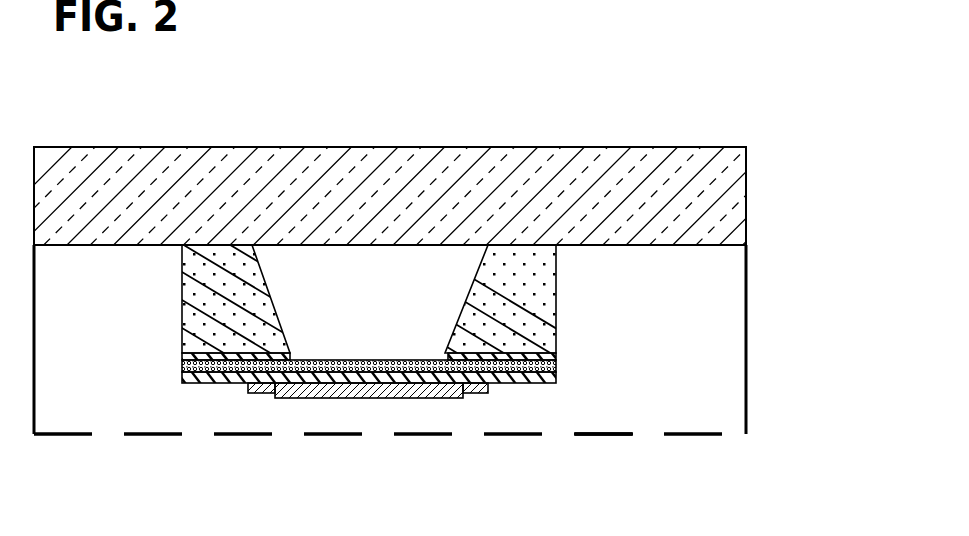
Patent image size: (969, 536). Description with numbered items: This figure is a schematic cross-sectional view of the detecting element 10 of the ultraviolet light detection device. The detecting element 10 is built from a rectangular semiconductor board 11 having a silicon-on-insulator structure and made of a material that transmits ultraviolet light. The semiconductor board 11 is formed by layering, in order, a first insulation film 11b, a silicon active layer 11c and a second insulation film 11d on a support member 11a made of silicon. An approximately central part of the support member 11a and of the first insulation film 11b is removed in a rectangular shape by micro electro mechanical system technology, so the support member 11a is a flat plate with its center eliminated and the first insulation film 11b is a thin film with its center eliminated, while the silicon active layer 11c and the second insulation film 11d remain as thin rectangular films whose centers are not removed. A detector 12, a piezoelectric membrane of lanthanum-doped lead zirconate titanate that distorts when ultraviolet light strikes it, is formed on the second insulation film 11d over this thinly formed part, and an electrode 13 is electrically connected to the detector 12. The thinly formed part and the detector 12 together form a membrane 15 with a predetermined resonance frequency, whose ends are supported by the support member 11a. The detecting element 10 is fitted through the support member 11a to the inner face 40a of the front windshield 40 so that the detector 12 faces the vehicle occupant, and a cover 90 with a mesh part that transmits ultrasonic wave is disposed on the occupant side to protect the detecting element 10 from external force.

The detecting element 10 is at (163, 355).
The front windshield 40 is at (318, 180).
The inner face of the front windshield 40a is at (128, 246).
The semiconductor board 11 is at (476, 295).
The support member 11a is at (527, 298).
The first insulation film 11b is at (555, 345).
The silicon active layer 11c is at (555, 364).
The second insulation film 11d is at (530, 381).
The detector 12 is at (368, 398).
The electrode 13 is at (262, 394).
The membrane 15 is at (376, 341).
The cover 90 is at (613, 437).